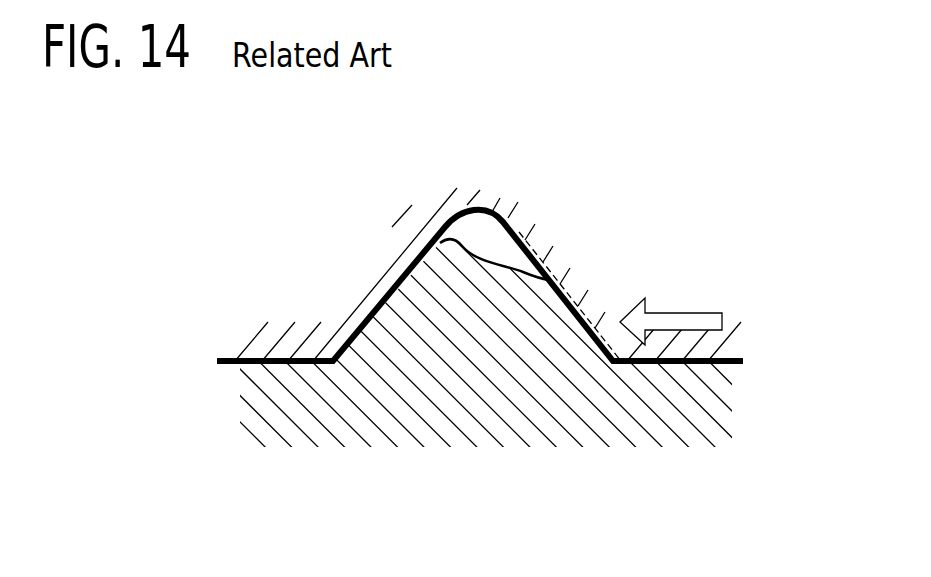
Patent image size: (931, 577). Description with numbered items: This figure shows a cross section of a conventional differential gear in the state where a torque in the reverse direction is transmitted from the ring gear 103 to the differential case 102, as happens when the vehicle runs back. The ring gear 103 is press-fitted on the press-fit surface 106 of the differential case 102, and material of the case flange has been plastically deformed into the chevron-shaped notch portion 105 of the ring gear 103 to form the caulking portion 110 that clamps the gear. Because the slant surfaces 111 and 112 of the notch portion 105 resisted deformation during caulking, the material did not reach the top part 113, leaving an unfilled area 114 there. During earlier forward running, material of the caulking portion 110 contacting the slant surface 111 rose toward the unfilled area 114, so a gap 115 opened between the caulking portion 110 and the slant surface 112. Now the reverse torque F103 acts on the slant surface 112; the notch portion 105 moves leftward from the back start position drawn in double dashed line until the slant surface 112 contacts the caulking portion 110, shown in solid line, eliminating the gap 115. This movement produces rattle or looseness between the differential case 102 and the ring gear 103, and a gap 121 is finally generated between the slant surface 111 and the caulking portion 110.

The differential case 102 is at (778, 362).
The ring gear 103 is at (778, 208).
The notch portion 105 is at (533, 232).
The press-fit surface 106 is at (297, 418).
The caulking portion 110 is at (480, 327).
The slant surface 111 is at (414, 241).
The slant surface 112 is at (558, 250).
The top part 113 is at (474, 234).
The unfilled area 114 is at (437, 222).
The gap 115 is at (583, 307).
The gap 121 is at (349, 314).
The torque F103 is at (686, 318).